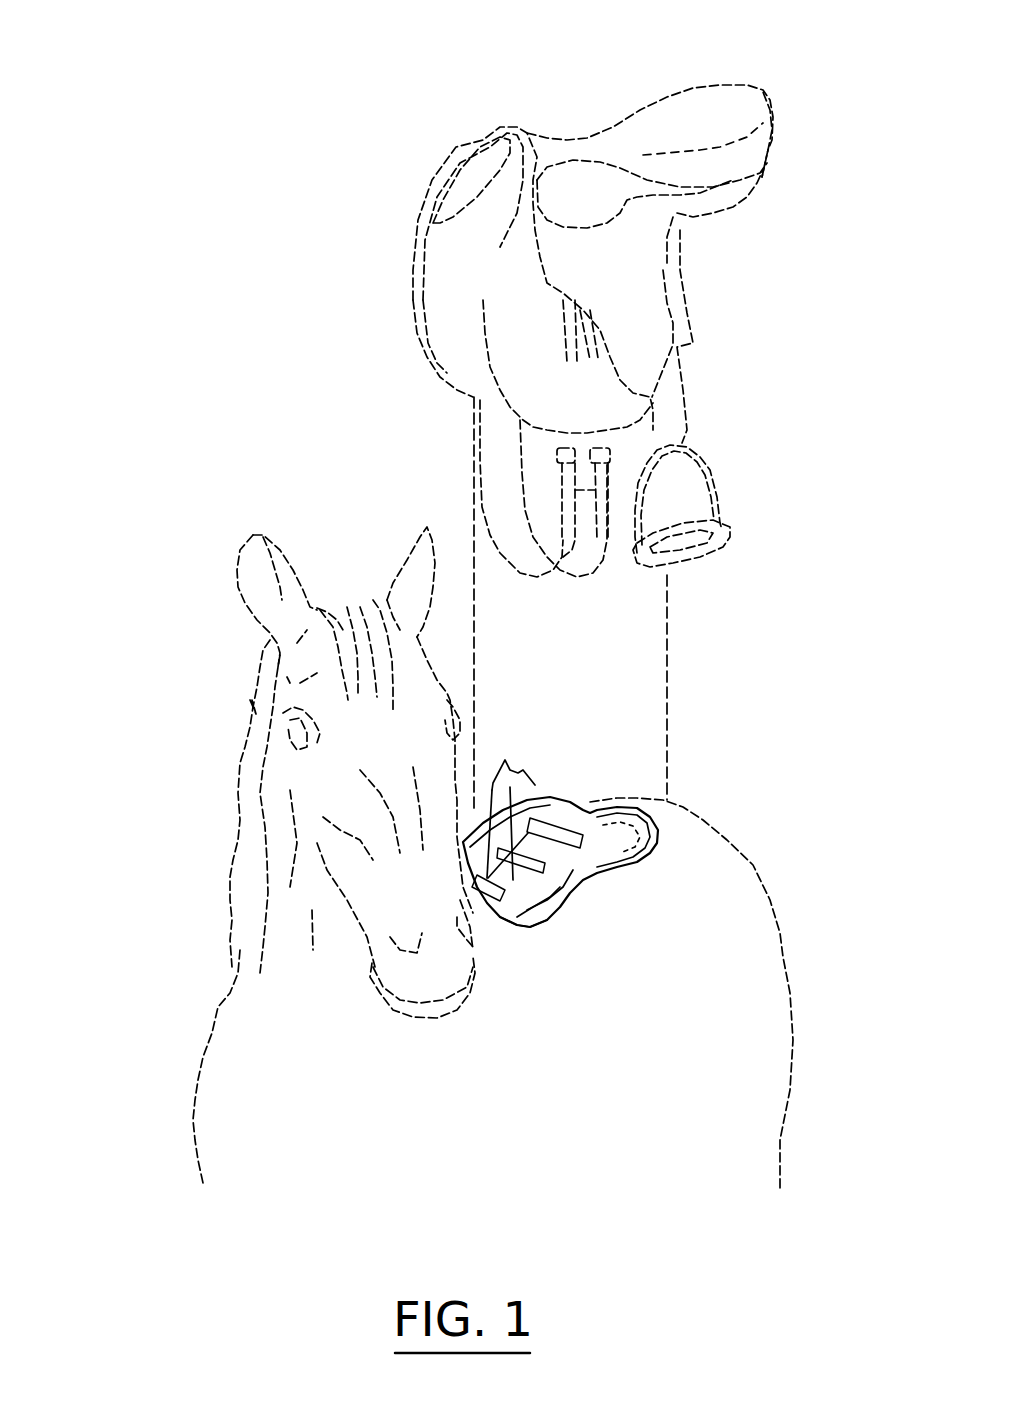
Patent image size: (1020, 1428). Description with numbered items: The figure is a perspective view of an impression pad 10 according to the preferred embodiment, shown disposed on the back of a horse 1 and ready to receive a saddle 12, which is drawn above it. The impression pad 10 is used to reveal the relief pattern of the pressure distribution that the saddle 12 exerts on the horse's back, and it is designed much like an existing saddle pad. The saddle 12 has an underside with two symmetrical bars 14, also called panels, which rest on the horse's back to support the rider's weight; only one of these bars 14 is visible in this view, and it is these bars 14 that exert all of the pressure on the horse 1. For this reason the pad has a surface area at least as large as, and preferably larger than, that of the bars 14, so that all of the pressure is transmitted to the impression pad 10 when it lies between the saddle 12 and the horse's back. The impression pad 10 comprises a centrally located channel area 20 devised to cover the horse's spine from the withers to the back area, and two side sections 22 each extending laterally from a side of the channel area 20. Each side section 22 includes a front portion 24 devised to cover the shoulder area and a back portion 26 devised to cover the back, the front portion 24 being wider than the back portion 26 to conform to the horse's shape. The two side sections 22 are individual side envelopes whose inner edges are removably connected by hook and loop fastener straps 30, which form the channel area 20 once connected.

The horse 1 is at (183, 770).
The impression pad 10 is at (668, 812).
The saddle 12 is at (545, 137).
The symmetrical bars 14 is at (725, 206).
The channel area 20 is at (594, 800).
The side sections 22 is at (560, 805).
The front portion 24 is at (517, 903).
The back portion 26 is at (623, 848).
The hook and loop fastener straps 30 is at (511, 804).